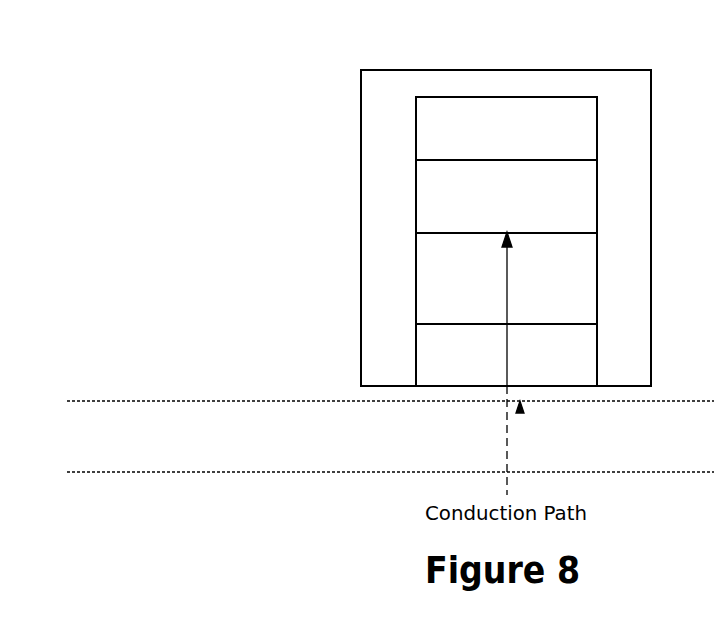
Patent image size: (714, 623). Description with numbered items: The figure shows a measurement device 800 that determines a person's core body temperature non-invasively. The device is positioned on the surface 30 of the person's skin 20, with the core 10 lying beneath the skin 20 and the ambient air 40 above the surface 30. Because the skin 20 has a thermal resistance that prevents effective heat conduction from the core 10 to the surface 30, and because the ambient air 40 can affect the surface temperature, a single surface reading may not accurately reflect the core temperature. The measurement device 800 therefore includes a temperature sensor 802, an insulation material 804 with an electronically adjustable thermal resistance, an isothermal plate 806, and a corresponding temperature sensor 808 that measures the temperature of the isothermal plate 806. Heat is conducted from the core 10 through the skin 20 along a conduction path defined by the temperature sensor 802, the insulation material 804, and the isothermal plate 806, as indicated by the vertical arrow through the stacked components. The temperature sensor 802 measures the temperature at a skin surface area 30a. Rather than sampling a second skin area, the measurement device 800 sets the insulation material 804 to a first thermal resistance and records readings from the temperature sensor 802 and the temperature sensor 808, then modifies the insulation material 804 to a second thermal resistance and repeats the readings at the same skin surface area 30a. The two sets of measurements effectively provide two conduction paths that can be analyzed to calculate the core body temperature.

The measurement device 800 is at (384, 53).
The temperature sensor 808 is at (506, 128).
The isothermal plate 806 is at (506, 196).
The insulation material 804 is at (506, 278).
The temperature sensor 802 is at (506, 355).
The ambient air 40 is at (102, 264).
The surface 30 is at (379, 387).
The skin surface area 30a is at (521, 412).
The skin 20 is at (78, 438).
The core 10 is at (379, 493).